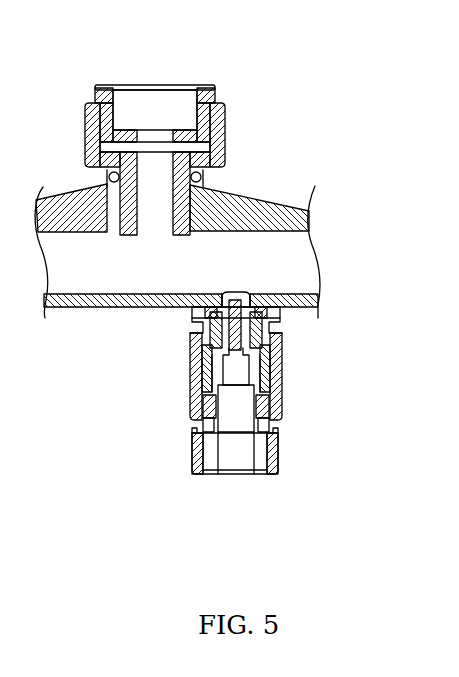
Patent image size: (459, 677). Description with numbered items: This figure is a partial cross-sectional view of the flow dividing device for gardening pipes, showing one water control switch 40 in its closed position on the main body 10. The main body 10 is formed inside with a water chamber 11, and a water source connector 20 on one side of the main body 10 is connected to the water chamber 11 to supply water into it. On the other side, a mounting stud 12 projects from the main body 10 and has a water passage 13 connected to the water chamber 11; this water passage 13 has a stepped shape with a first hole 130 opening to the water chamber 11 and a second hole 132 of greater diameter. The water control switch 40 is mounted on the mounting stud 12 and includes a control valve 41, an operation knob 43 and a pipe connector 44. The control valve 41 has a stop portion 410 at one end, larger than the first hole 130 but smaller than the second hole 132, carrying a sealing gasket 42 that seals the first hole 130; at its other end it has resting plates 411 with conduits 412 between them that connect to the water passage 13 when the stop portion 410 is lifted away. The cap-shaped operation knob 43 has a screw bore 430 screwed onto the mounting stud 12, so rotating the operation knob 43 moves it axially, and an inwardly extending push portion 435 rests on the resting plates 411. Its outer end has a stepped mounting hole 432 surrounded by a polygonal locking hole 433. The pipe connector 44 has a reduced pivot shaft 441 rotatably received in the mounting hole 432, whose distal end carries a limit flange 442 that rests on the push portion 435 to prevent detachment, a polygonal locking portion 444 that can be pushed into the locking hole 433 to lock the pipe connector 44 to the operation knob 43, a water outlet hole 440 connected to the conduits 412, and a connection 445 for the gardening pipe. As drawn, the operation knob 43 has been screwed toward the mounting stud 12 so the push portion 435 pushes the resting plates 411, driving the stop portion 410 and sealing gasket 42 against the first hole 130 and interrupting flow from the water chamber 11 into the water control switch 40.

The main body 10 is at (261, 191).
The water chamber 11 is at (285, 267).
The mounting stud 12 is at (192, 323).
The water passage 13 is at (222, 293).
The first hole 130 is at (280, 303).
The water source connector 20 is at (158, 86).
The water control switch 40 is at (156, 383).
The control valve 41 is at (282, 363).
The sealing gasket 42 is at (250, 293).
The operation knob 43 is at (185, 368).
The pipe connector 44 is at (248, 477).
The second hole 132 is at (190, 357).
The stop portion 410 is at (262, 326).
The resting plate 411 is at (275, 382).
The conduit 412 is at (192, 385).
The screw bore 430 is at (280, 357).
The mounting hole 432 is at (282, 413).
The locking hole 433 is at (192, 432).
The push portion 435 is at (190, 415).
The water outlet hole 440 is at (238, 403).
The pivot shaft 441 is at (237, 403).
The limit flange 442 is at (275, 393).
The locking portion 444 is at (278, 428).
The connection 445 is at (192, 457).